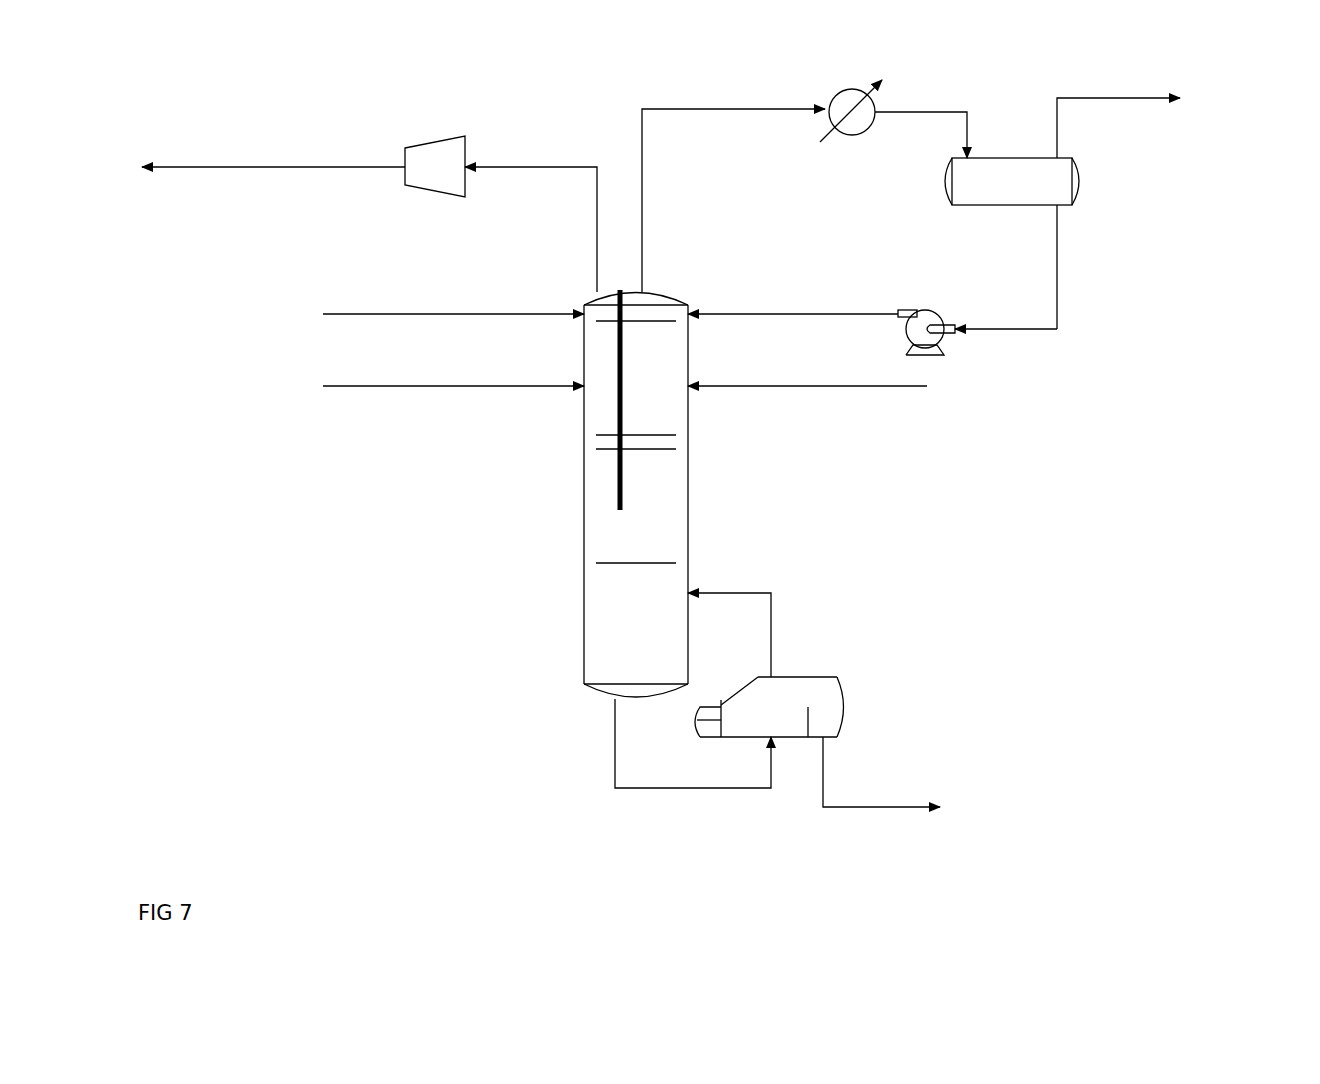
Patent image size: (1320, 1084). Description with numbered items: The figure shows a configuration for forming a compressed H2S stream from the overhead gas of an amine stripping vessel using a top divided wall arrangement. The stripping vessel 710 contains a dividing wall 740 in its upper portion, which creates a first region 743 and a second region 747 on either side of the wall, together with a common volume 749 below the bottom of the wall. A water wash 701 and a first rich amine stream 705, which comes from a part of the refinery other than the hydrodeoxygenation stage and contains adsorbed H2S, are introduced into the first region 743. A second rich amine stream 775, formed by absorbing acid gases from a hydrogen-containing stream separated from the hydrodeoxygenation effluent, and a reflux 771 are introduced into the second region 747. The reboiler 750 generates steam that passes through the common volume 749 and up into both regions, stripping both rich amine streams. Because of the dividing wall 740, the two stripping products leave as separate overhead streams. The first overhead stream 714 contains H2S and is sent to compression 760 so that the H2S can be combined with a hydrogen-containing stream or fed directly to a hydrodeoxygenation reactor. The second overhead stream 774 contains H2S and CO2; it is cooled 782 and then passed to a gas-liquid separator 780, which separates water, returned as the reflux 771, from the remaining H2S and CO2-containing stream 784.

The water wash 701 is at (318, 311).
The first rich amine stream 705 is at (334, 416).
The stripping vessel 710 is at (558, 590).
The overhead stream 714 is at (523, 143).
The dividing wall 740 is at (633, 371).
The first region 743 is at (600, 398).
The second region 747 is at (654, 418).
The common volume 749 is at (608, 637).
The reboiler 750 is at (852, 672).
The compression 760 is at (406, 194).
The reflux 771 is at (705, 301).
The overhead stream 774 is at (659, 160).
The second rich amine stream 775 is at (930, 425).
The gas-liquid separator 780 is at (1097, 206).
The cooling 782 is at (838, 147).
The H2S and CO2-containing stream 784 is at (1155, 115).